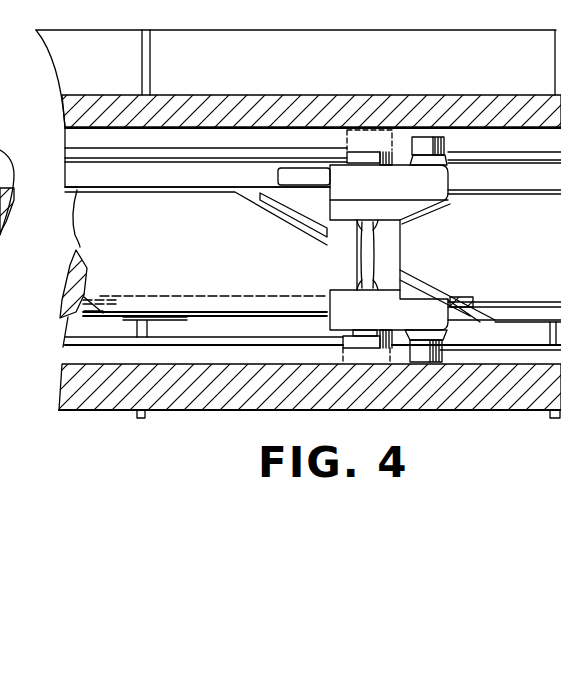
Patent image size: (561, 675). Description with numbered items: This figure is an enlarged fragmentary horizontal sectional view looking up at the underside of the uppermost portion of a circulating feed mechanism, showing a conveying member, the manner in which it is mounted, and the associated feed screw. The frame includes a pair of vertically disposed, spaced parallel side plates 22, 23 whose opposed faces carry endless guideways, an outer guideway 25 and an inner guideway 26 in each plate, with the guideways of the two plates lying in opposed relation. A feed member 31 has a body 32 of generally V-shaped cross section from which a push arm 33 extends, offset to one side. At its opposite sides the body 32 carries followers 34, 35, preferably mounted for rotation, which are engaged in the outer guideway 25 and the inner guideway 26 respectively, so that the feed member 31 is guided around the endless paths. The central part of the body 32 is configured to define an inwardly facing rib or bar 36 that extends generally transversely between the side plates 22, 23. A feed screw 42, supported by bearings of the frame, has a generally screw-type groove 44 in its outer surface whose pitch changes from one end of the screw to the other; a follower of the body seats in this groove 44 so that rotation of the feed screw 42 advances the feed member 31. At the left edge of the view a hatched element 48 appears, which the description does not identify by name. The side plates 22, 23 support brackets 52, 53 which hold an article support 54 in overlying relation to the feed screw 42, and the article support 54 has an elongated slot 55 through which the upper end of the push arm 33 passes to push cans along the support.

The side plate 22 is at (370, 100).
The side plate 23 is at (212, 402).
The outer guideway 25 is at (65, 153).
The inner guideway 26 is at (77, 135).
The feed member 31 is at (436, 208).
The body 32 is at (432, 303).
The push arm 33 is at (277, 173).
The follower 34 is at (345, 155).
The follower 35 is at (438, 147).
The inwardly facing rib or bar 36 is at (363, 257).
The feed screw 42 is at (80, 230).
The groove 44 is at (273, 208).
The flange 48 is at (0, 158).
The bracket 52 is at (148, 62).
The bracket 53 is at (152, 335).
The article support 54 is at (298, 38).
The elongated slot 55 is at (80, 170).